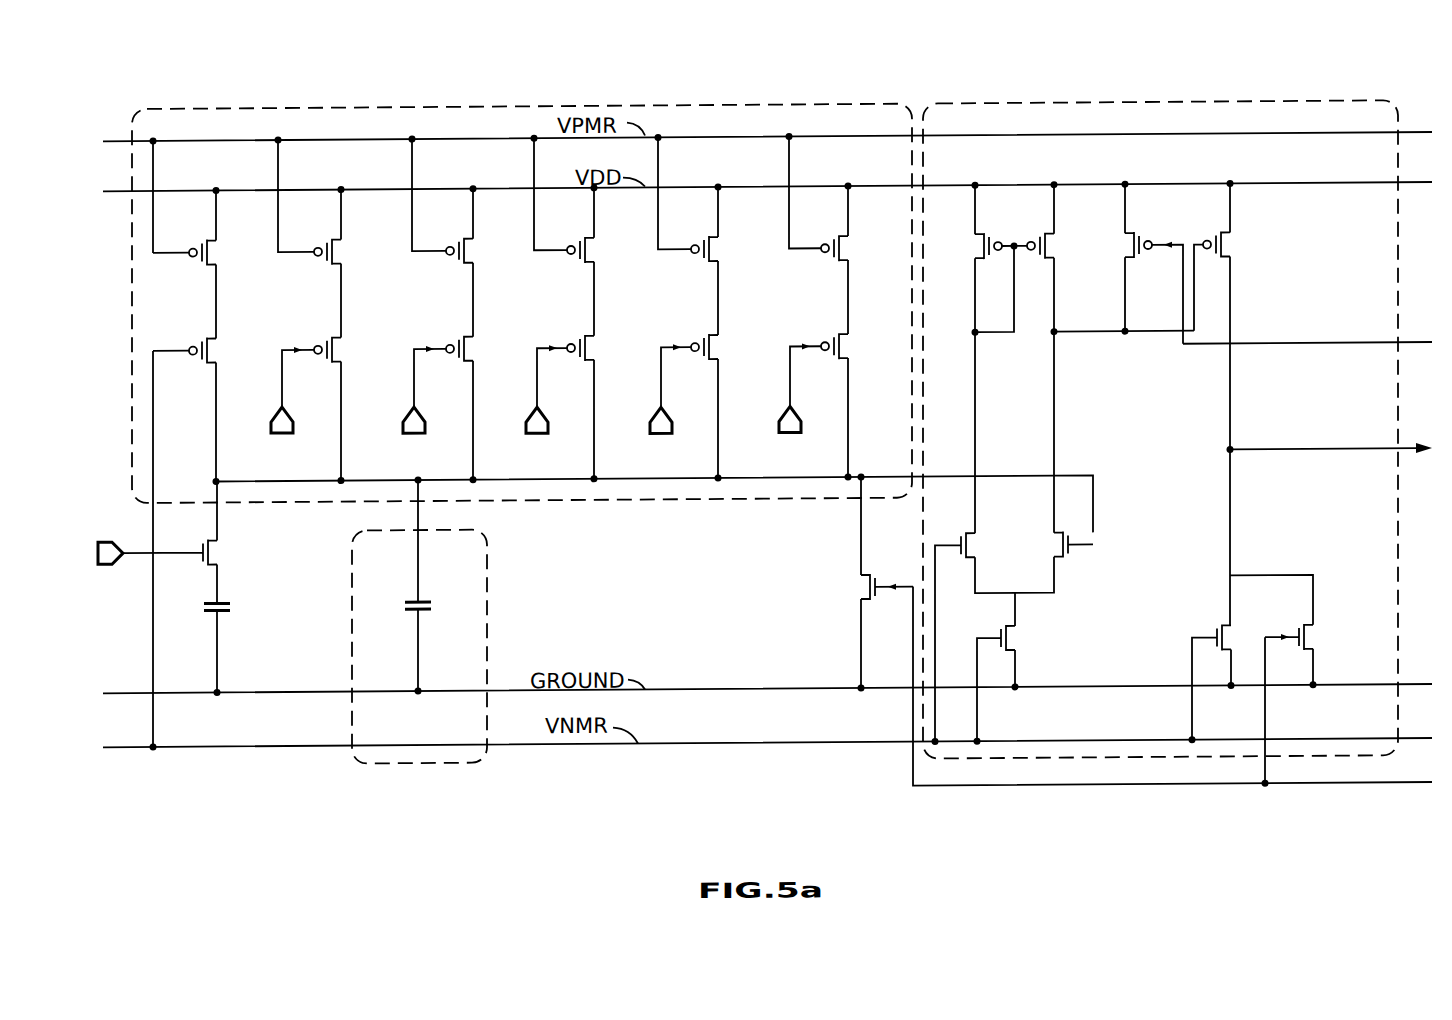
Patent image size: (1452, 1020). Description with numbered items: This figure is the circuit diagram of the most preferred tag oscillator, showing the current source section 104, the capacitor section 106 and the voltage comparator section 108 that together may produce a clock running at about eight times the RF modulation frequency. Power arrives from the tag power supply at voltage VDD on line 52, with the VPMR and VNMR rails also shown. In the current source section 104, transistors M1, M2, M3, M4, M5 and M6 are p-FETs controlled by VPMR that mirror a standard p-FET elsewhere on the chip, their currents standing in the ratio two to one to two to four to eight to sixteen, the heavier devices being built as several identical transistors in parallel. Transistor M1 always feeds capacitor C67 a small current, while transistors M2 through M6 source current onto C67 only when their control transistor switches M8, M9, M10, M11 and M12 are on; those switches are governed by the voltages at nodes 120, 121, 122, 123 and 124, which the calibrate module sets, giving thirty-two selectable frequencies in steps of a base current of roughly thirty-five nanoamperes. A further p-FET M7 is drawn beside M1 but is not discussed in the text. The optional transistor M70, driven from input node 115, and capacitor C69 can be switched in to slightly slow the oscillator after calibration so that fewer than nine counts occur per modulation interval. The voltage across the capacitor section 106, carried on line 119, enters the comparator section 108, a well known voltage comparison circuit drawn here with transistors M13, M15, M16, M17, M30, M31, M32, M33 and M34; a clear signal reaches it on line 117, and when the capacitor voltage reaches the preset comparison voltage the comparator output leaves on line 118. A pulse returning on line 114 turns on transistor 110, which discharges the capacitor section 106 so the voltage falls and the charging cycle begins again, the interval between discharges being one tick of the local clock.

The current source section 104 is at (326, 110).
The voltage comparator section 108 is at (950, 112).
The capacitor section 106 is at (487, 603).
The VDD line 52 is at (1267, 192).
The comparator clear line 117 is at (1277, 352).
The comparator output line 118 is at (1273, 460).
The capacitor voltage line 119 is at (1062, 479).
The discharge pulse line 114 is at (1020, 797).
The discharge transistor 110 is at (865, 591).
The bias input pad 115 is at (128, 559).
The control node 120 is at (796, 443).
The control node 121 is at (667, 443).
The control node 122 is at (543, 442).
The control node 123 is at (420, 441).
The control node 124 is at (288, 440).
The p-FET current source transistor M1 is at (209, 255).
The p-FET current source transistor M2 is at (334, 255).
The p-FET current source transistor M3 is at (466, 255).
The p-FET current source transistor M4 is at (587, 255).
The p-FET current source transistor M5 is at (711, 255).
The p-FET current source transistor M6 is at (841, 255).
The PMOS transistor M7 is at (210, 354).
The control transistor switch M8 is at (335, 354).
The control transistor switch M9 is at (467, 354).
The control transistor switch M10 is at (588, 354).
The control transistor switch M11 is at (712, 354).
The control transistor switch M12 is at (842, 354).
The PMOS transistor M13 is at (983, 254).
The PMOS transistor M15 is at (1057, 254).
The PMOS transistor M16 is at (1132, 252).
The PMOS transistor M17 is at (1228, 264).
The NMOS transistor M30 is at (970, 554).
The NMOS transistor M31 is at (1060, 549).
The NMOS transistor M32 is at (1013, 647).
The NMOS transistor M33 is at (1223, 647).
The NMOS transistor M34 is at (1307, 647).
The slowing transistor M70 is at (213, 556).
The oscillator capacitor C67 is at (416, 605).
The slowing capacitor C69 is at (228, 607).